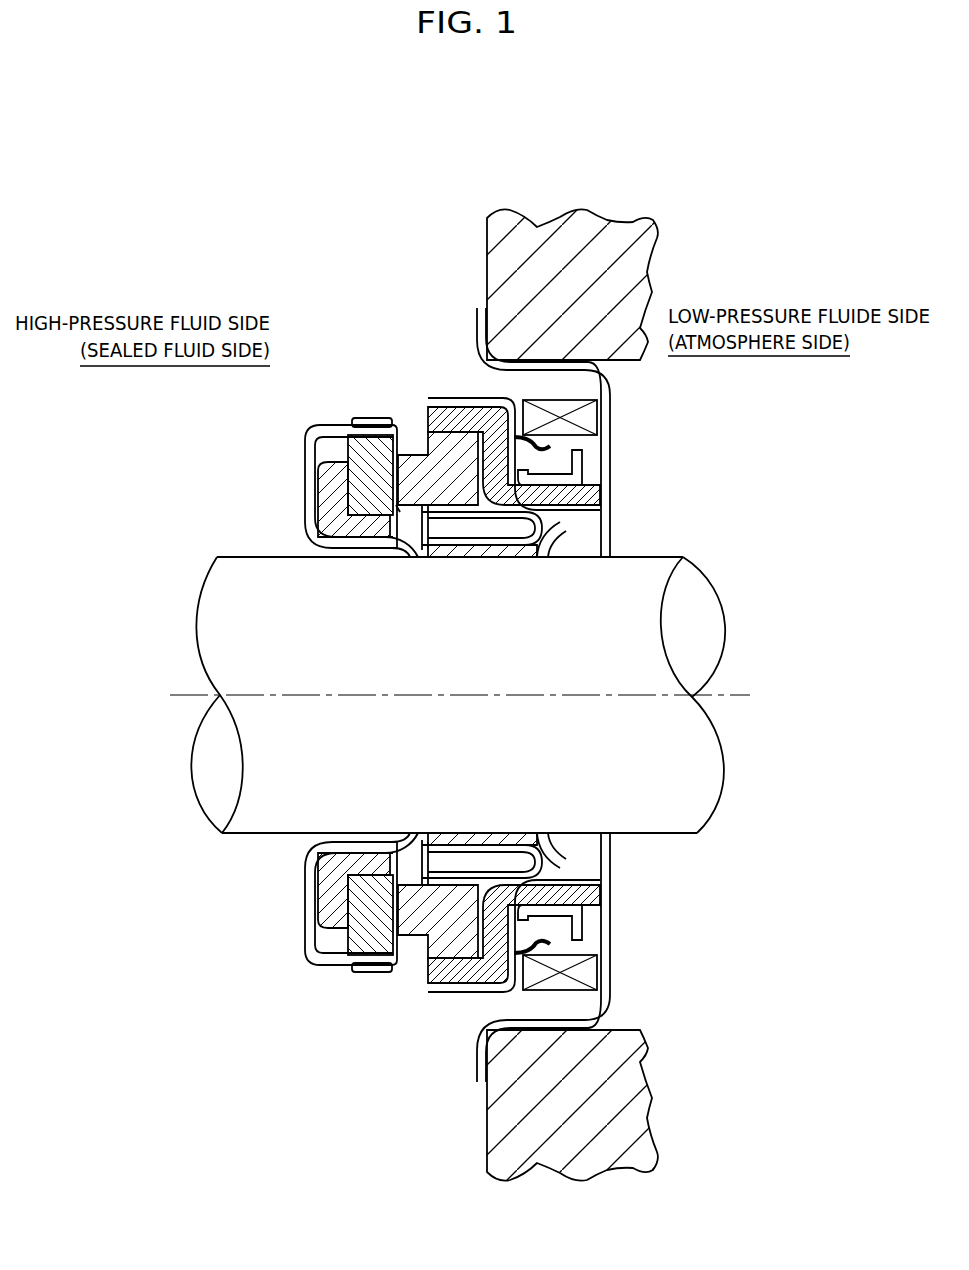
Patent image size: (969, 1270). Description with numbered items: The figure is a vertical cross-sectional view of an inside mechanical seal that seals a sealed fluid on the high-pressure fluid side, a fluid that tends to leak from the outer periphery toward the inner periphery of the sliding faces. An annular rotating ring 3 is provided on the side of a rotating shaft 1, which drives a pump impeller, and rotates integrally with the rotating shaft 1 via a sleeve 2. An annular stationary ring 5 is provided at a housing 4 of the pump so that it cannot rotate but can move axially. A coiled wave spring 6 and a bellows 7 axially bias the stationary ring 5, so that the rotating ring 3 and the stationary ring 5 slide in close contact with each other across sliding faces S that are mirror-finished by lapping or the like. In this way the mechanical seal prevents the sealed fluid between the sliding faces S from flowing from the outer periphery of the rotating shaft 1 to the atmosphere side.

The rotating shaft 1 is at (353, 657).
The sleeve 2 is at (313, 493).
The rotating ring 3 is at (353, 440).
The housing 4 is at (560, 238).
The stationary ring 5 is at (425, 447).
The coiled wave spring 6 is at (610, 420).
The bellows 7 is at (473, 406).
The sliding faces S is at (398, 510).